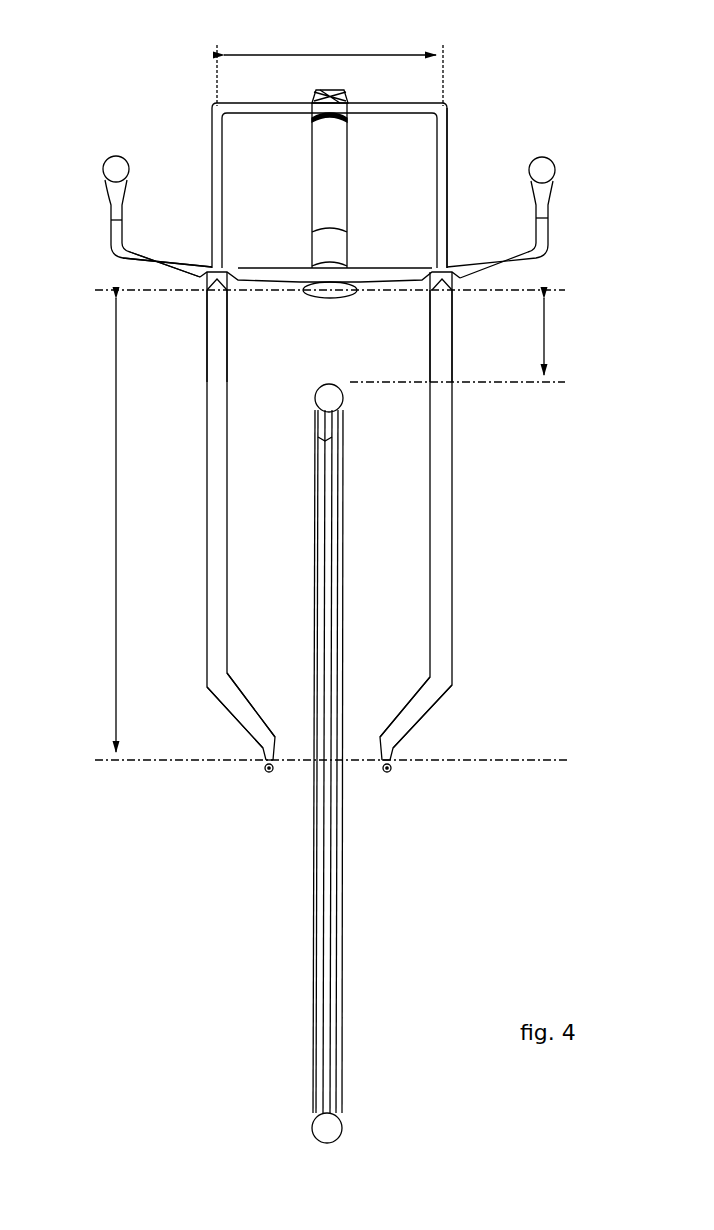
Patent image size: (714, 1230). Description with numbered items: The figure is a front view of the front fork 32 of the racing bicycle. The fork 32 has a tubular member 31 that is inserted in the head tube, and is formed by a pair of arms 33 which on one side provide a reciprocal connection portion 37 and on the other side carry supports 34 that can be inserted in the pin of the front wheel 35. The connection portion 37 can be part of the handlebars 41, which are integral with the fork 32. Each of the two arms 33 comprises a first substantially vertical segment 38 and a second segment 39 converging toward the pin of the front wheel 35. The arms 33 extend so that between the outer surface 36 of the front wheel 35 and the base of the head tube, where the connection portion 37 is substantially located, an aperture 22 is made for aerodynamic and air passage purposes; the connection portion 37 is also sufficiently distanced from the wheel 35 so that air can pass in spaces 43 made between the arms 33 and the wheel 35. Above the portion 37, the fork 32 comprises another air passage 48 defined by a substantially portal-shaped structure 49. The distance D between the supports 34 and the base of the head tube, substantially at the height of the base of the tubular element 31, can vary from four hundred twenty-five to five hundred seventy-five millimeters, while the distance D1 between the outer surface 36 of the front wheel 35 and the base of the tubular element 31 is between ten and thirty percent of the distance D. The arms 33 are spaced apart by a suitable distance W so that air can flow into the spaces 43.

The aperture 22 is at (422, 327).
The tubular member 31 is at (330, 186).
The fork 32 is at (579, 220).
The arms 33 is at (206, 433).
The supports 34 is at (269, 772).
The front wheel 35 is at (345, 1093).
The outer surface 36 is at (330, 398).
The reciprocal connection portion 37 is at (290, 284).
The first substantially vertical segment 38 is at (208, 356).
The second segment 39 is at (237, 710).
The handlebars 41 is at (122, 263).
The spaces 43 is at (272, 600).
The air passage 48 is at (232, 172).
The portal-shaped structure 49 is at (449, 143).
The distance W is at (403, 55).
The distance D is at (115, 457).
The distance D1 is at (546, 340).